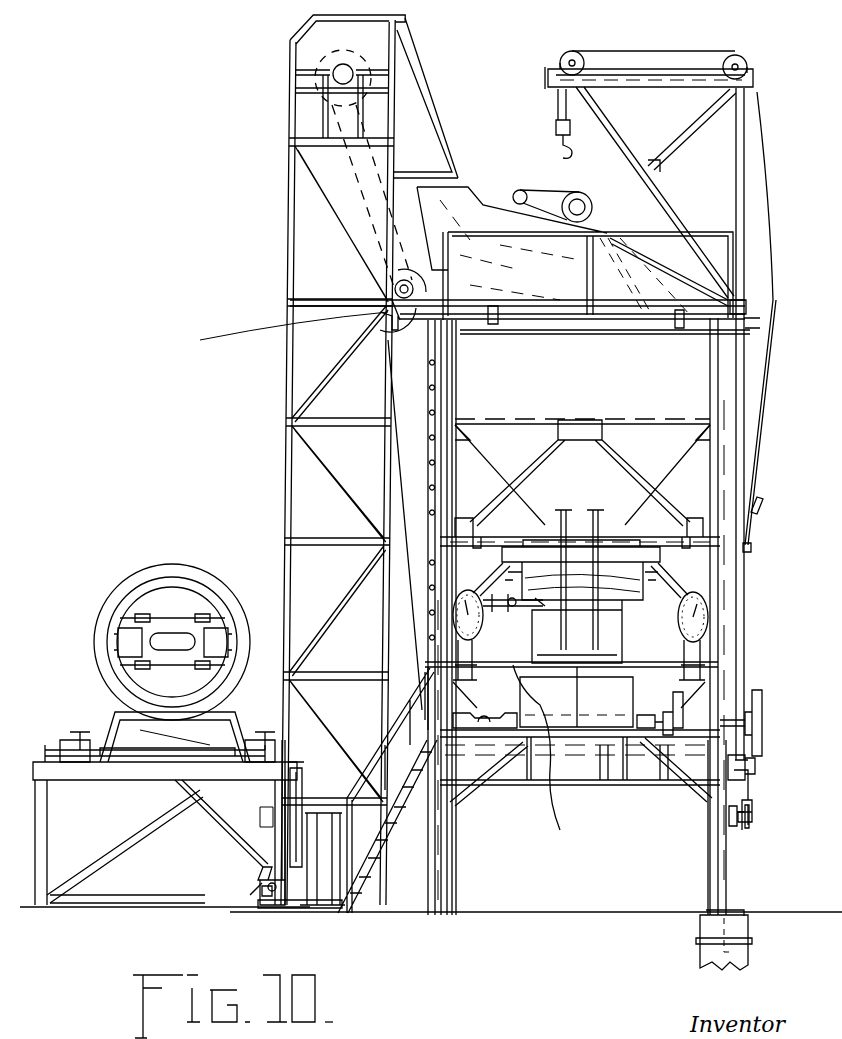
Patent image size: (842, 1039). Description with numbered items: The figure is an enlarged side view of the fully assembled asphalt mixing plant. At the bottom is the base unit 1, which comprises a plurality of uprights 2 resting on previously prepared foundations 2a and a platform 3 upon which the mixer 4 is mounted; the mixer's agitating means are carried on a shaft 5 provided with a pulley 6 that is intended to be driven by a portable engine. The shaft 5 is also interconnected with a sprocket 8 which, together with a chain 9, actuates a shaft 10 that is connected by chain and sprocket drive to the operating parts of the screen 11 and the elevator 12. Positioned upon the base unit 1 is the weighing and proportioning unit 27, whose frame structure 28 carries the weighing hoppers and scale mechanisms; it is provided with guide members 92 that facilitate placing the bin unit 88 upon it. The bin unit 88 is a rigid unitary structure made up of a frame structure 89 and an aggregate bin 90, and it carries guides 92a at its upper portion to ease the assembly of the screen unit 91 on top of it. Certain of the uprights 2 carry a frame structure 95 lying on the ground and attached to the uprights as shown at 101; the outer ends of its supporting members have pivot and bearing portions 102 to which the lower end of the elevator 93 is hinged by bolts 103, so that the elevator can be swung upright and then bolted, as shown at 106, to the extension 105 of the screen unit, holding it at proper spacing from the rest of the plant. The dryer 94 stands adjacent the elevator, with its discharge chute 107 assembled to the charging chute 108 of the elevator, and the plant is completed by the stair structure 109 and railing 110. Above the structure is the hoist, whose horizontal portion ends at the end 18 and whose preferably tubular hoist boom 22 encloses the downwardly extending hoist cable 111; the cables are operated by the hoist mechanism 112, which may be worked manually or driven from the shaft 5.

The base unit 1 is at (718, 866).
The uprights 2 is at (726, 889).
The foundations 2a is at (718, 965).
The platform 3 is at (752, 724).
The mixer 4 is at (626, 702).
The shaft 5 is at (655, 748).
The pulley 6 is at (758, 752).
The sprocket 8 is at (432, 713).
The chain 9 is at (440, 383).
The shaft 10 is at (388, 346).
The screen 11 is at (562, 220).
The elevator 12 is at (300, 108).
The end of the horizontal portion of the hoist 18 is at (674, 80).
The hoist boom 22 is at (752, 356).
The weighing and proportioning unit 27 is at (713, 620).
The frame structure 28 is at (715, 578).
The bin unit 88 is at (700, 410).
The frame structure 89 is at (715, 488).
The aggregate bin 90 is at (750, 310).
The screen unit 91 is at (486, 208).
The guide members 92 is at (686, 548).
The guides 92a is at (680, 330).
The elevator 93 is at (285, 452).
The dryer 94 is at (160, 574).
The frame structure 95 is at (318, 908).
The attachment of the anchorage frame structure to the uprights 101 is at (258, 884).
The pivot and bearing portions 102 is at (278, 905).
The bolts 103 is at (250, 902).
The extension of the screen unit 105 is at (480, 326).
The bolted connection of elevator to screen unit extension 106 is at (300, 337).
The discharge chute 107 is at (245, 794).
The charging chute 108 is at (262, 830).
The stair structure 109 is at (392, 805).
The railing 110 is at (552, 762).
The hoist cable 111 is at (752, 800).
The hoist mechanism 112 is at (752, 818).